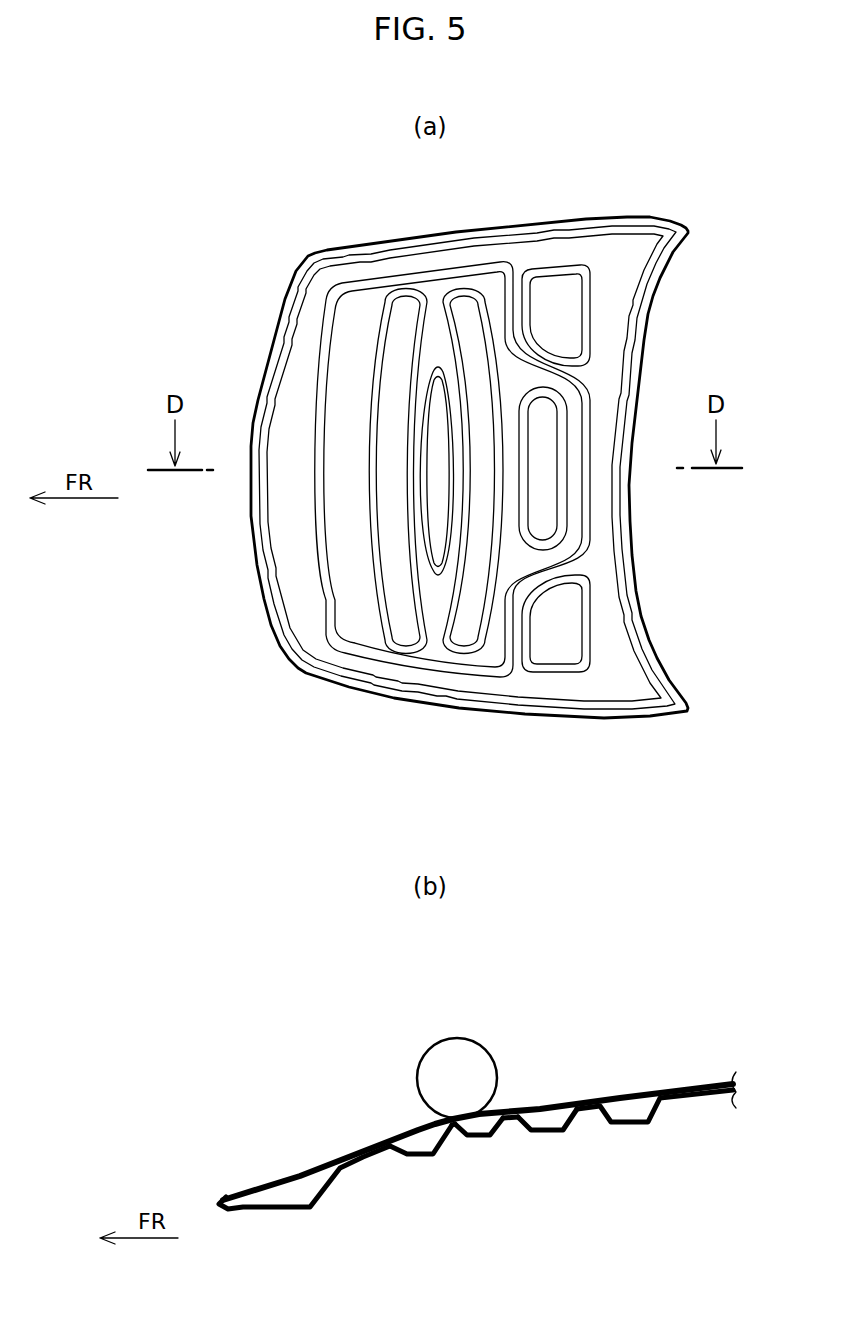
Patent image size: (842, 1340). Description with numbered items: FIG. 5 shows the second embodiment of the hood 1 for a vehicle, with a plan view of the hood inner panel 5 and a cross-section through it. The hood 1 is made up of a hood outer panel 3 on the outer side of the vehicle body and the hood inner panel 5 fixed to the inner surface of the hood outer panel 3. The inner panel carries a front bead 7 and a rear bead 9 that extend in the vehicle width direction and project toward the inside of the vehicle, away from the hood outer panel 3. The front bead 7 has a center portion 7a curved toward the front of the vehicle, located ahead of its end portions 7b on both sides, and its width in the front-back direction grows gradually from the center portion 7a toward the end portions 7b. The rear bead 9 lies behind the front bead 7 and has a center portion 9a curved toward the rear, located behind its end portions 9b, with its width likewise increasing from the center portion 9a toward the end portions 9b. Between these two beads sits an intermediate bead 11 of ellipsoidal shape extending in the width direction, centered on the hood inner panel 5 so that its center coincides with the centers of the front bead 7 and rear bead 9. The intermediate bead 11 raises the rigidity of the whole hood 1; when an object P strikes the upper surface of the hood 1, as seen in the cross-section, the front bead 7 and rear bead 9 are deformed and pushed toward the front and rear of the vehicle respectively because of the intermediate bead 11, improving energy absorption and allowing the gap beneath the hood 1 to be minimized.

The hood 1 is at (462, 1126).
The hood outer panel 3 is at (372, 1128).
The hood inner panel 5 is at (607, 720).
The front bead 7 is at (332, 720).
The center portion 7a is at (387, 471).
The end portions 7b is at (404, 303).
The rear bead 9 is at (559, 707).
The center portion 9a is at (492, 462).
The end portions 9b is at (467, 303).
The intermediate bead 11 is at (422, 417).
The object P is at (455, 1036).